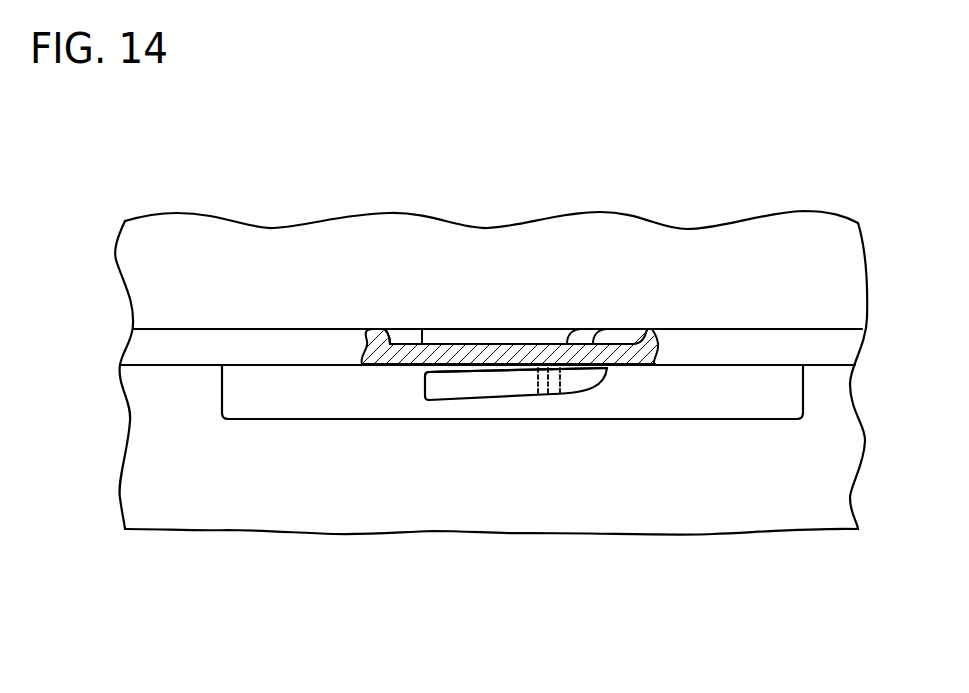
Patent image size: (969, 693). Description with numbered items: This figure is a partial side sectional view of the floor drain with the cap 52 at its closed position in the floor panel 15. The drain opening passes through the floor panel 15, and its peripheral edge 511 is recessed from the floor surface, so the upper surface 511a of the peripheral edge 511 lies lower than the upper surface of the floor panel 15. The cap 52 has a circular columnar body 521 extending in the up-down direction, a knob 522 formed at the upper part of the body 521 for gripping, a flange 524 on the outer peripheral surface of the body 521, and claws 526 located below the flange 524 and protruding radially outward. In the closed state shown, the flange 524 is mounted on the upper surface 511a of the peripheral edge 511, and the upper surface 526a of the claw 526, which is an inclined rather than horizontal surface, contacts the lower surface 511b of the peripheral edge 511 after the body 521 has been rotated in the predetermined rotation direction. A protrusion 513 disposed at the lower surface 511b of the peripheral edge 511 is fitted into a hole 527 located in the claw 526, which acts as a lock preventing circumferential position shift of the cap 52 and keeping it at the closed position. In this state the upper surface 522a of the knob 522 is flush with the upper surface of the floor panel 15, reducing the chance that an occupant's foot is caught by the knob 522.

The floor panel 15 is at (140, 346).
The cap 52 is at (756, 418).
The body 521 is at (260, 418).
The knob 522 is at (529, 205).
The upper surface of the knob 522a is at (527, 327).
The flange 524 is at (408, 335).
The claw 526 is at (483, 385).
The upper surface of the claw 526a is at (470, 368).
The hole 527 is at (546, 392).
The peripheral edge 511 is at (563, 253).
The upper surface of the peripheral edge 511a is at (555, 340).
The lower surface of the peripheral edge 511b is at (417, 365).
The protrusion 513 is at (538, 392).